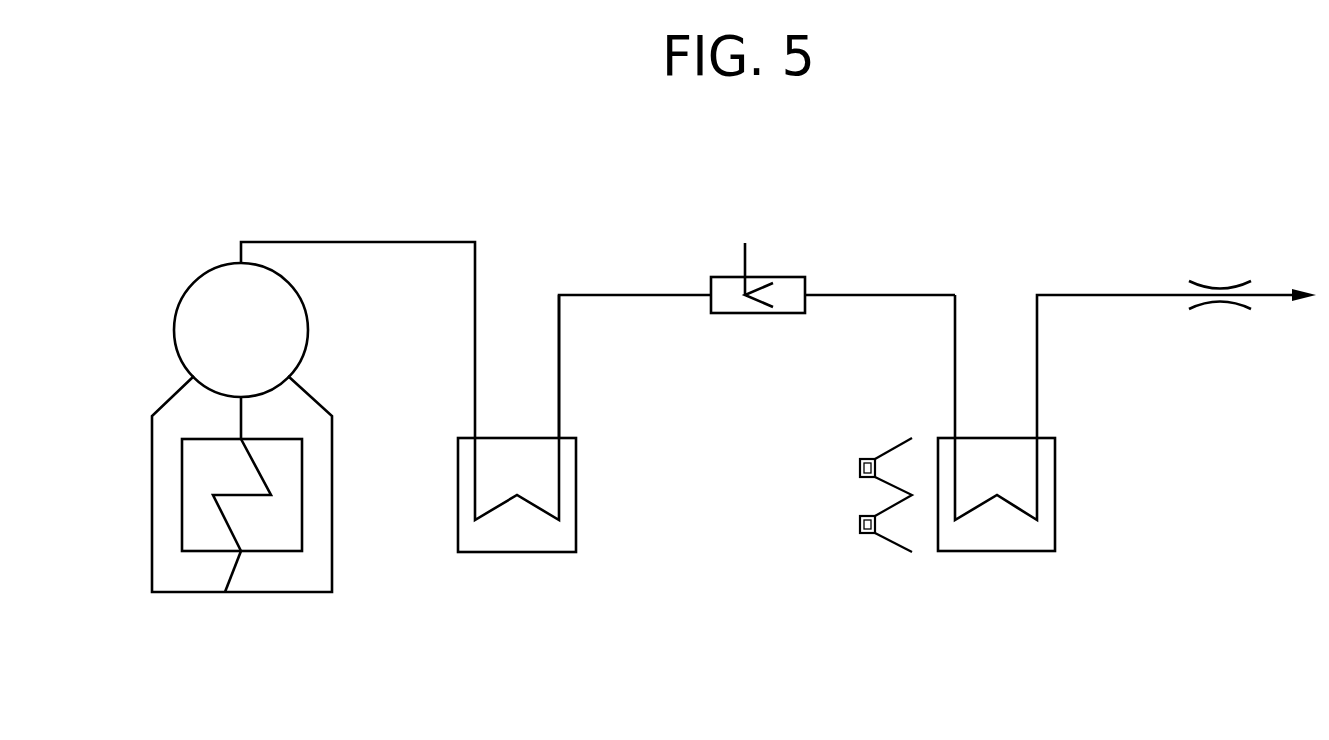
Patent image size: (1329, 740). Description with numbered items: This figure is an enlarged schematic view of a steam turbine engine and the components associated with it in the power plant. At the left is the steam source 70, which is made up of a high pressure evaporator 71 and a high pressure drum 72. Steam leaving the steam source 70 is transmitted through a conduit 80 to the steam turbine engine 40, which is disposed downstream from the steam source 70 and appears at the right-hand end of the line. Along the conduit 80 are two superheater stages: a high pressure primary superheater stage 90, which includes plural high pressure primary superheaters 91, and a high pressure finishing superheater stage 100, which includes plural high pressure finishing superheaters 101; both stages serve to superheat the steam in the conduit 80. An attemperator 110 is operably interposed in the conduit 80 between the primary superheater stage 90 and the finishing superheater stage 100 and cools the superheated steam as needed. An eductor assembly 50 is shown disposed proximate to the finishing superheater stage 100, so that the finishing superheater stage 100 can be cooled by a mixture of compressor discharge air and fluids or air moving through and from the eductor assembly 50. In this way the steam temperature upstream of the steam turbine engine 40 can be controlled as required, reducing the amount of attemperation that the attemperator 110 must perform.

The steam turbine engine 40 is at (1201, 288).
The eductor assembly 50 is at (845, 470).
The steam source 70 is at (289, 566).
The high pressure evaporator 71 is at (262, 472).
The high pressure drum 72 is at (307, 297).
The conduit 80 is at (562, 371).
The high pressure primary superheater stage 90 is at (523, 527).
The high pressure primary superheaters 91 is at (538, 496).
The high pressure finishing superheater stage 100 is at (989, 528).
The high pressure finishing superheaters 101 is at (1023, 492).
The attemperator 110 is at (741, 322).